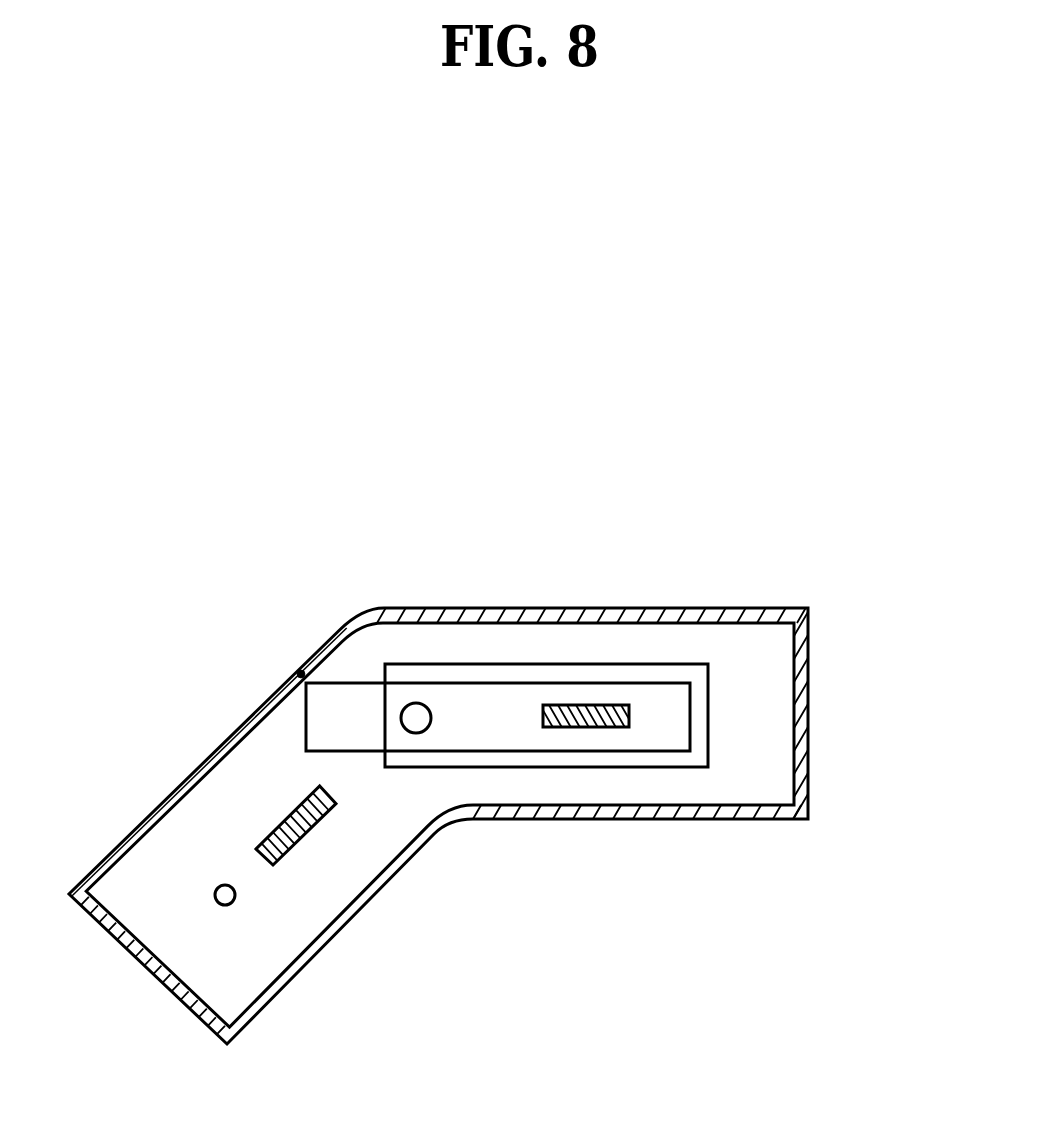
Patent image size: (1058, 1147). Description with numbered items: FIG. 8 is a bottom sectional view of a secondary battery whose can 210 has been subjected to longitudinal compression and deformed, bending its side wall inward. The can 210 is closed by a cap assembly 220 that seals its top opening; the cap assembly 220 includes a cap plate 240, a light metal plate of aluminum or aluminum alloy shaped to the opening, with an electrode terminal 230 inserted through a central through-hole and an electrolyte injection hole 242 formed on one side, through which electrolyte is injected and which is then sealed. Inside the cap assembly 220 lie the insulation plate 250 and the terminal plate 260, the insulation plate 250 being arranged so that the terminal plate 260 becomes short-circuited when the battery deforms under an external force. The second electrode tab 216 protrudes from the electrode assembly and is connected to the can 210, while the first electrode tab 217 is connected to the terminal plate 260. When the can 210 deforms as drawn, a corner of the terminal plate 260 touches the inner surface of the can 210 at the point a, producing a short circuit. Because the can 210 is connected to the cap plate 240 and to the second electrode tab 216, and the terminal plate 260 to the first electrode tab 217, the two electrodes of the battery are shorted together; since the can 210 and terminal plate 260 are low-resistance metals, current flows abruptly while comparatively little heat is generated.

The can 210 is at (324, 940).
The second electrode tab 216 is at (275, 822).
The first electrode tab 217 is at (571, 703).
The cap assembly 220 is at (846, 510).
The electrode terminal 230 is at (414, 702).
The cap plate 240 is at (777, 780).
The electrolyte injection hole 242 is at (214, 886).
The insulation plate 250 is at (647, 666).
The terminal plate 260 is at (512, 732).
The point a is at (298, 672).